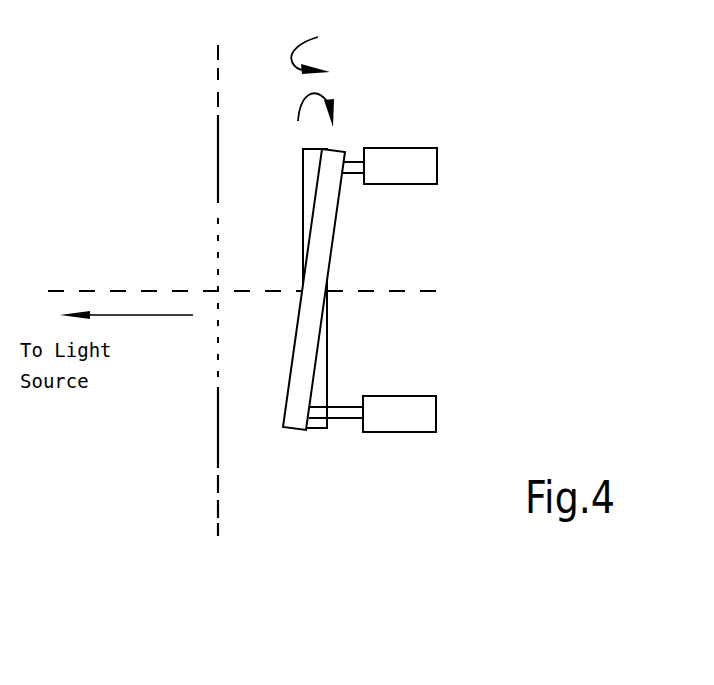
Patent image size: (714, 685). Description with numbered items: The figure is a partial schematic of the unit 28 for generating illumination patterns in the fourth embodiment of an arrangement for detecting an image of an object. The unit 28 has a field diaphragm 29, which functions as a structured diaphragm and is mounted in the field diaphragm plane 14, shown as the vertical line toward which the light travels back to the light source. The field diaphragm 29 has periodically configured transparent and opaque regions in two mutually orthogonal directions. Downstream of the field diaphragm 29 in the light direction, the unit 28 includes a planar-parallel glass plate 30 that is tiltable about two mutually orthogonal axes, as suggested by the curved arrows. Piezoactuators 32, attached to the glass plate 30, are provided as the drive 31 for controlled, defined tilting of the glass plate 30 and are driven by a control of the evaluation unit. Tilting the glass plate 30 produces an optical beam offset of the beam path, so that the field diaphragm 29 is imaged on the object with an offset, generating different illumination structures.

The field diaphragm plane 14 is at (217, 79).
The unit for generating illumination patterns 28 is at (180, 488).
The field diaphragm 29 is at (217, 175).
The planar-parallel glass plate 30 is at (297, 420).
The drive 31 is at (421, 113).
The piezoactuators 32 is at (380, 279).